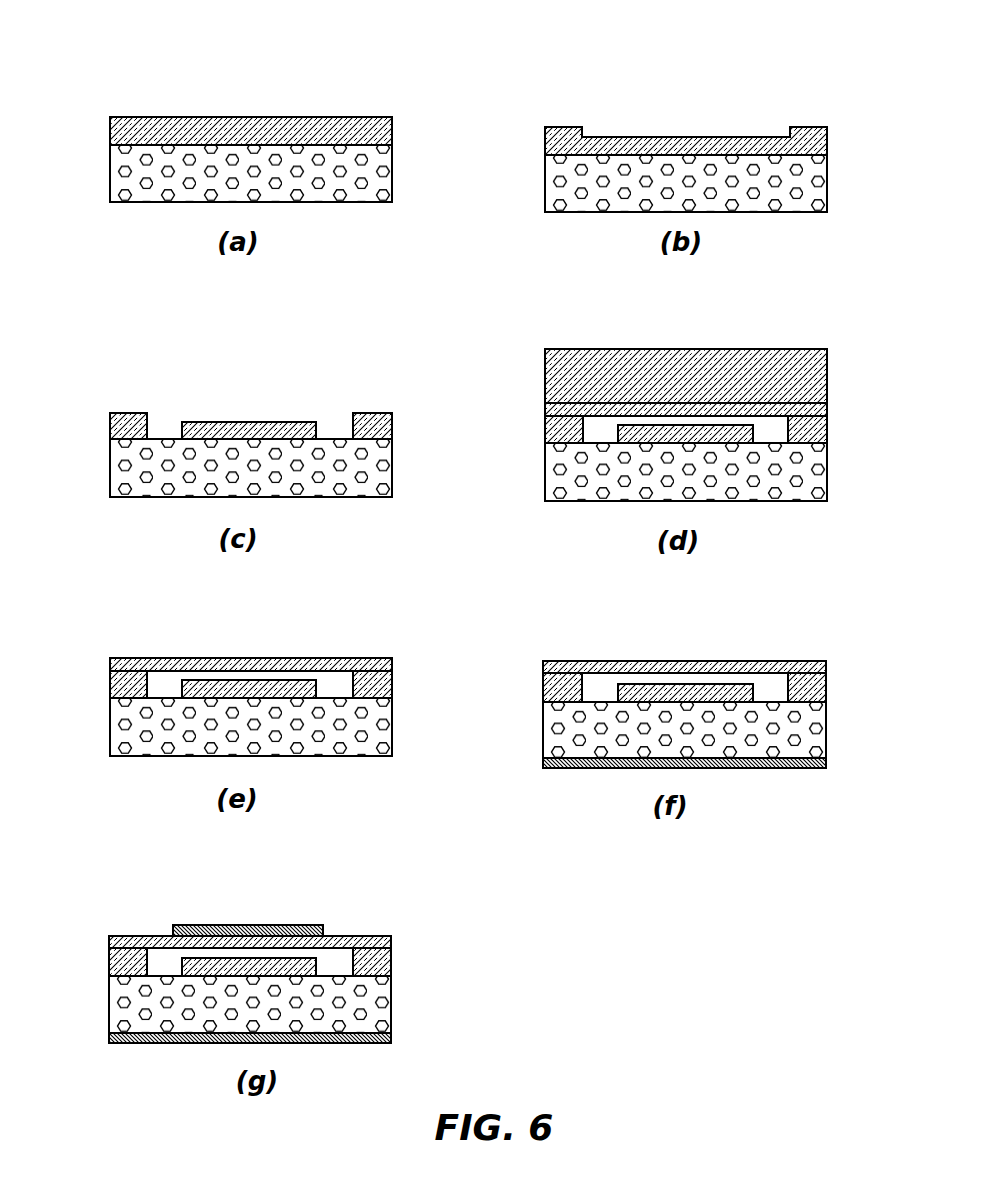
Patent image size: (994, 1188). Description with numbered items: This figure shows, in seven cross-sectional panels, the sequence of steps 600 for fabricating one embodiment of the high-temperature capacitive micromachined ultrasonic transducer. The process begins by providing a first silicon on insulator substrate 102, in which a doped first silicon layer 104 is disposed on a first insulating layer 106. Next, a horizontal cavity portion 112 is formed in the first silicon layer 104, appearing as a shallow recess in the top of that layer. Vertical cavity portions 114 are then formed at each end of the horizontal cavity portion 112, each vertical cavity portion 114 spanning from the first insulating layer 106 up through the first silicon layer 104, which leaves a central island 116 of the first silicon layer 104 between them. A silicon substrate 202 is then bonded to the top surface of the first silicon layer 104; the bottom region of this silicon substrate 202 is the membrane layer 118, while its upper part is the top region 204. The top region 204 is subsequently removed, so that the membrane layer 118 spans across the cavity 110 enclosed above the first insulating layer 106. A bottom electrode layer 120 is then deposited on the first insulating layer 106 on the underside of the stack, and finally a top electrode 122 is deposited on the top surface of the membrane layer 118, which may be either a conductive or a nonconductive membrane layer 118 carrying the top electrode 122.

The fabrication process flow 600 is at (114, 78).
The first silicon on insulator (SOI) substrate 102 is at (102, 142).
The first silicon layer 104 is at (393, 128).
The first insulating layer 106 is at (392, 172).
The cavity 110 is at (596, 428).
The horizontal cavity portion 112 is at (661, 119).
The vertical cavity portion 114 is at (357, 420).
The center film island 116 is at (237, 422).
The membrane layer 118 is at (760, 405).
The bottom electrode layer 120 is at (593, 768).
The top electrode 122 is at (290, 925).
The silicon substrate 202 is at (530, 365).
The top region 204 is at (828, 360).